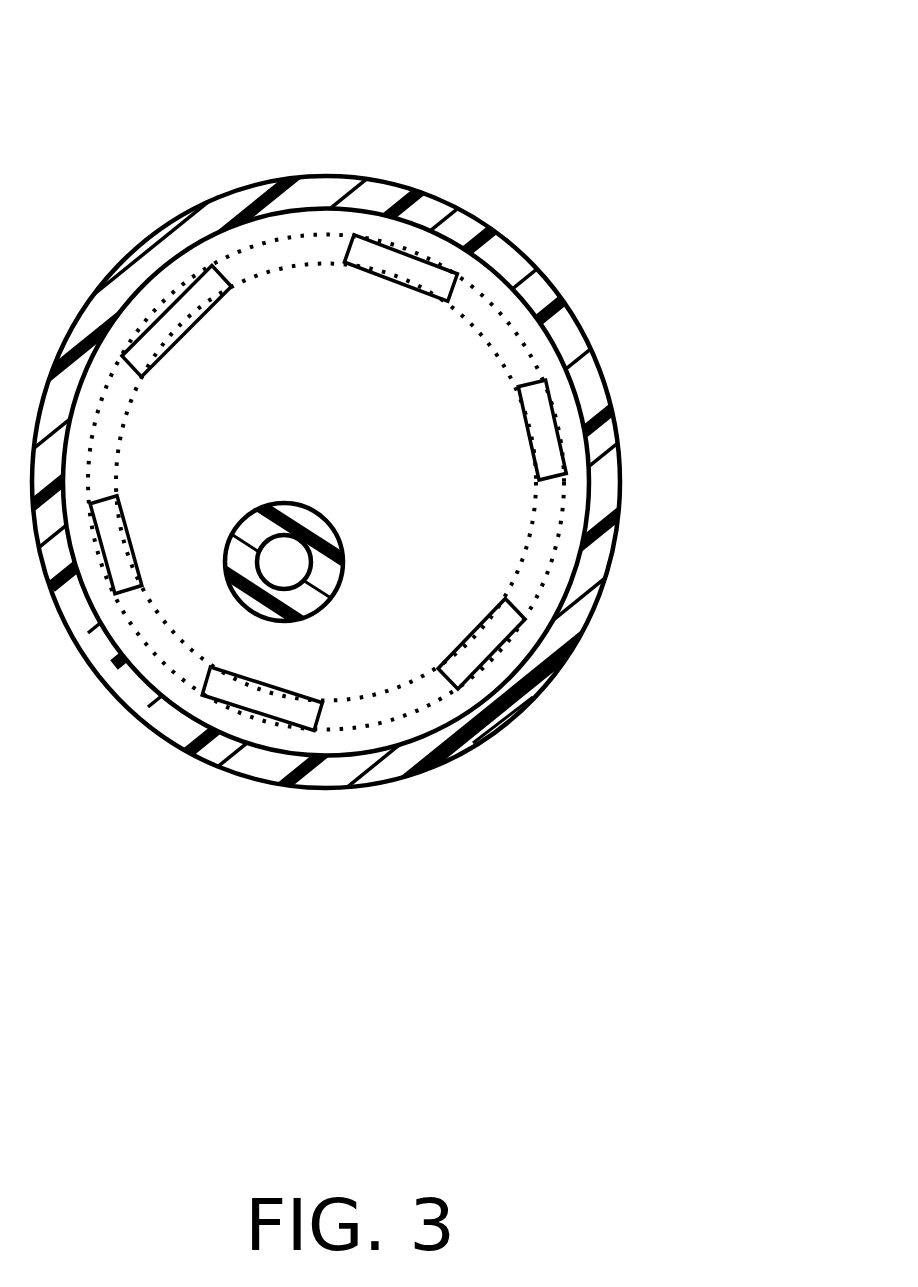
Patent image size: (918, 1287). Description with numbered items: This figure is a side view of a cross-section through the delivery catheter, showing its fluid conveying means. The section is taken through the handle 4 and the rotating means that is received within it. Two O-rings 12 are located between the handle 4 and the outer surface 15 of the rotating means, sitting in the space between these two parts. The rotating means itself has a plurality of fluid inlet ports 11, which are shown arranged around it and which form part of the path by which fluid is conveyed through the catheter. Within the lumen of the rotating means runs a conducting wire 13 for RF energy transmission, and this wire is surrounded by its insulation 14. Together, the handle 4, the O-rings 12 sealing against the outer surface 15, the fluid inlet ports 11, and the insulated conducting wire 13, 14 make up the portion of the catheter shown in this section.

The handle 4 is at (518, 240).
The fluid inlet ports 11 is at (295, 232).
The O-rings 12 is at (528, 312).
The conducting wire 13 is at (277, 575).
The insulation 14 is at (300, 603).
The outer surface 15 is at (405, 240).